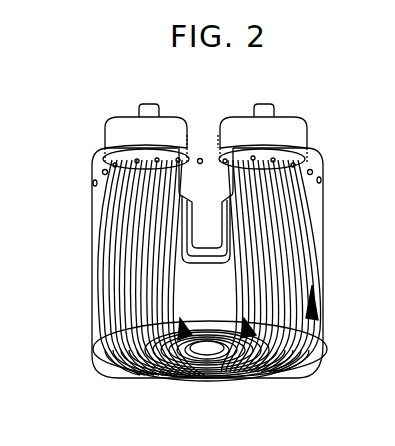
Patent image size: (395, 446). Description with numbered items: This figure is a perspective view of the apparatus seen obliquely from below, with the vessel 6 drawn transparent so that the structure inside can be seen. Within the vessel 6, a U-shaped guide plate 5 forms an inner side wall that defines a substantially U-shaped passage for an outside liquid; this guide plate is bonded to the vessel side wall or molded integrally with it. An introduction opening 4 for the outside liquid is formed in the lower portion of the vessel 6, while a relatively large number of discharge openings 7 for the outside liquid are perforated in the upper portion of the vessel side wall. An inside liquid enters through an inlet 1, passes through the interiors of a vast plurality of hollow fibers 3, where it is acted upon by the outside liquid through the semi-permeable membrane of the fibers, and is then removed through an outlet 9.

The inlet 1 is at (151, 110).
The hollow fibers 3 is at (105, 257).
The introduction opening 4 is at (203, 352).
The U-shaped guide plate 5 is at (182, 220).
The vessel 6 is at (322, 213).
The discharge openings 7 is at (321, 180).
The outlet 9 is at (268, 108).